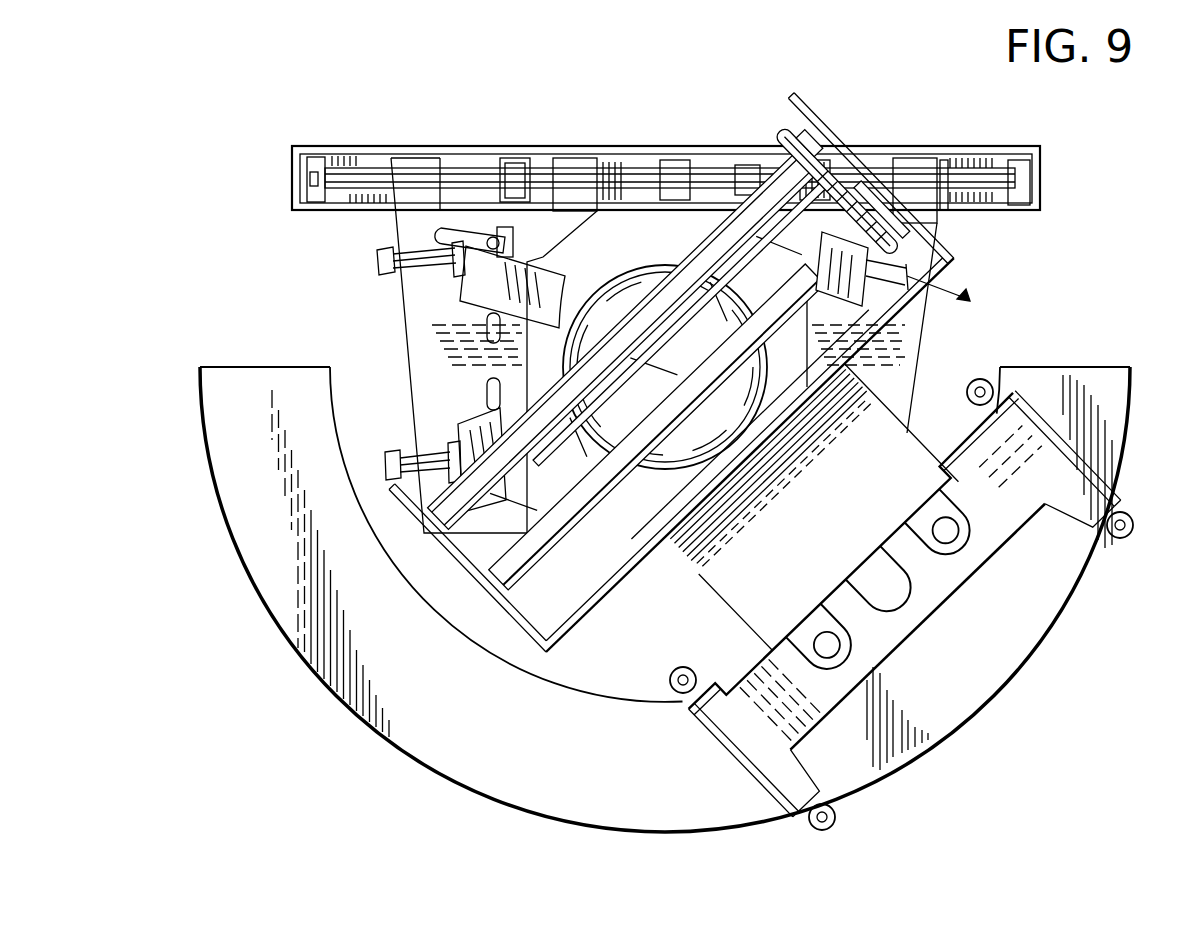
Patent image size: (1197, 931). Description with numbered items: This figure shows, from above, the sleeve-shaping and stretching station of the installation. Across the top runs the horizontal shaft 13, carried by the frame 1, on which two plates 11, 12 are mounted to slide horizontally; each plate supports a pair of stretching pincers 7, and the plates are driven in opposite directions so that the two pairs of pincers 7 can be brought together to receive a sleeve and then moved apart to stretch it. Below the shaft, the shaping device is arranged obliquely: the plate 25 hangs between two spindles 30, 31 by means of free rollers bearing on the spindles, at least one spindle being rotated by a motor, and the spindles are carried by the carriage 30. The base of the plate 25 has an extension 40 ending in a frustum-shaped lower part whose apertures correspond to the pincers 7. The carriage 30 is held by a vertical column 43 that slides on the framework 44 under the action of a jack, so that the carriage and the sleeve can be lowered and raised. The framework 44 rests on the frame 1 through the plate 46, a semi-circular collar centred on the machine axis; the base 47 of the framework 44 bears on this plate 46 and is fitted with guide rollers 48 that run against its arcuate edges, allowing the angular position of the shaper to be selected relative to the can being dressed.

The frame 1 is at (513, 148).
The shaft 13 is at (983, 180).
The plate 11 is at (401, 296).
The plate 12 is at (920, 317).
The stretching pincers 7 is at (468, 415).
The extension 40 is at (678, 466).
The spindle (carriage) 30 is at (540, 462).
The plate 25 is at (578, 452).
The spindle 31 is at (528, 532).
The framework 44 is at (1060, 447).
The base 47 is at (993, 547).
The vertical column 43 is at (830, 646).
The guide rollers 48 is at (987, 380).
The plate 46 is at (500, 737).